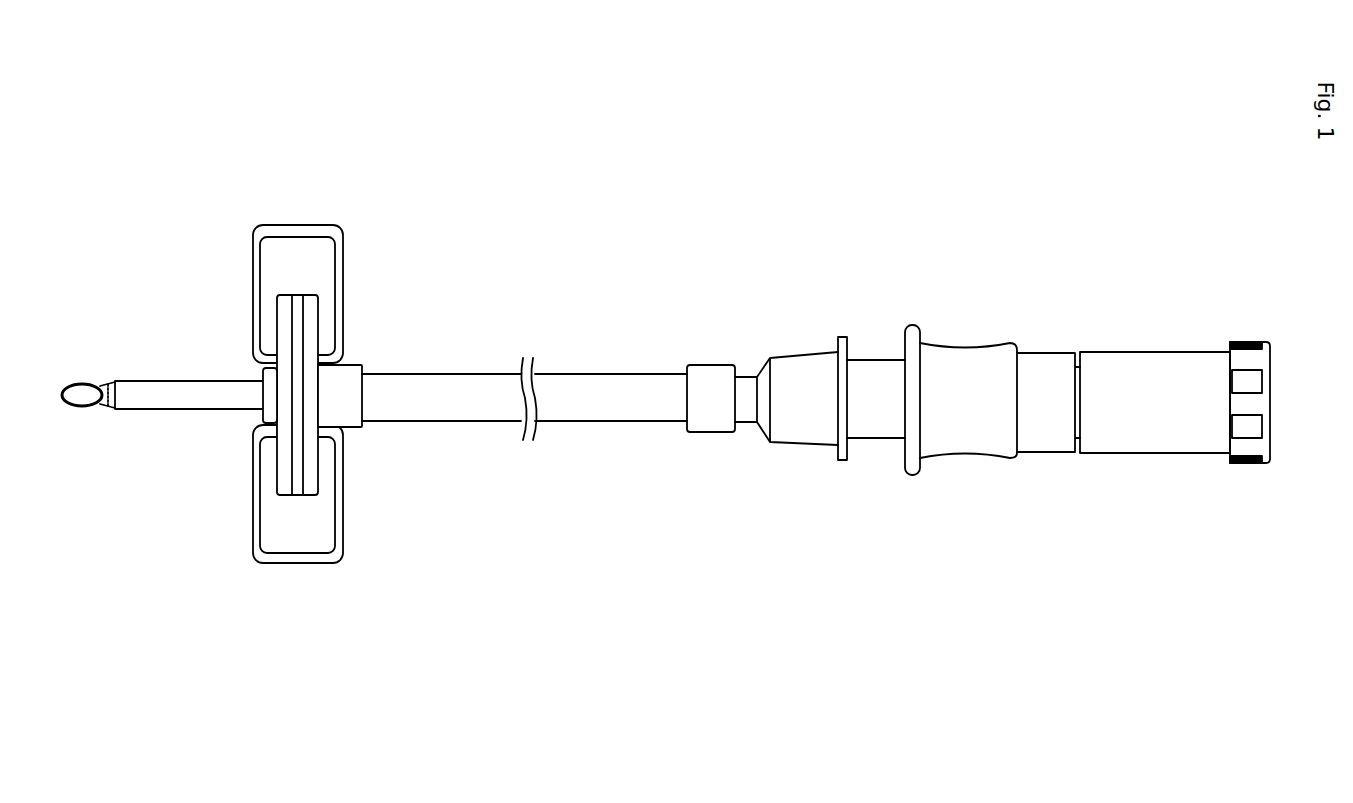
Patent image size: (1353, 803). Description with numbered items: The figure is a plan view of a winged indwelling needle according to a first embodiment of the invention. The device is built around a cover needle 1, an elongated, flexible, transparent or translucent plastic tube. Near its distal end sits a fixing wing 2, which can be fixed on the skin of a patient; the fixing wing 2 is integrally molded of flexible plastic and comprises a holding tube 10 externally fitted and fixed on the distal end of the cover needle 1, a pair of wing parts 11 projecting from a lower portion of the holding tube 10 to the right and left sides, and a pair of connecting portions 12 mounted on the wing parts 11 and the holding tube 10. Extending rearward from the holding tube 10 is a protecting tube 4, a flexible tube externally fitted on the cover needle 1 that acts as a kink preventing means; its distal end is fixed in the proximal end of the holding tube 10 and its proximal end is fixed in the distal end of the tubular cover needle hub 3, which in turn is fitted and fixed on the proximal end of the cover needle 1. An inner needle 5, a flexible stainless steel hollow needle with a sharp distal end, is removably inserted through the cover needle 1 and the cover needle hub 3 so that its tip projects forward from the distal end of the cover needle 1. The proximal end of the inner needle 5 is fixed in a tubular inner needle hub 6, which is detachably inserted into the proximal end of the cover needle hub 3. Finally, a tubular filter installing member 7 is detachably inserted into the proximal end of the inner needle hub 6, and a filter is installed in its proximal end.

The cover needle 1 is at (147, 380).
The fixing wing 2 is at (302, 380).
The cover needle hub 3 is at (787, 358).
The protecting tube 4 is at (597, 374).
The inner needle 5 is at (85, 382).
The inner needle hub 6 is at (1042, 350).
The filter installing member 7 is at (1145, 352).
The holding tube 10 is at (345, 365).
The wing parts 11 is at (252, 250).
The connecting portions 12 is at (277, 318).